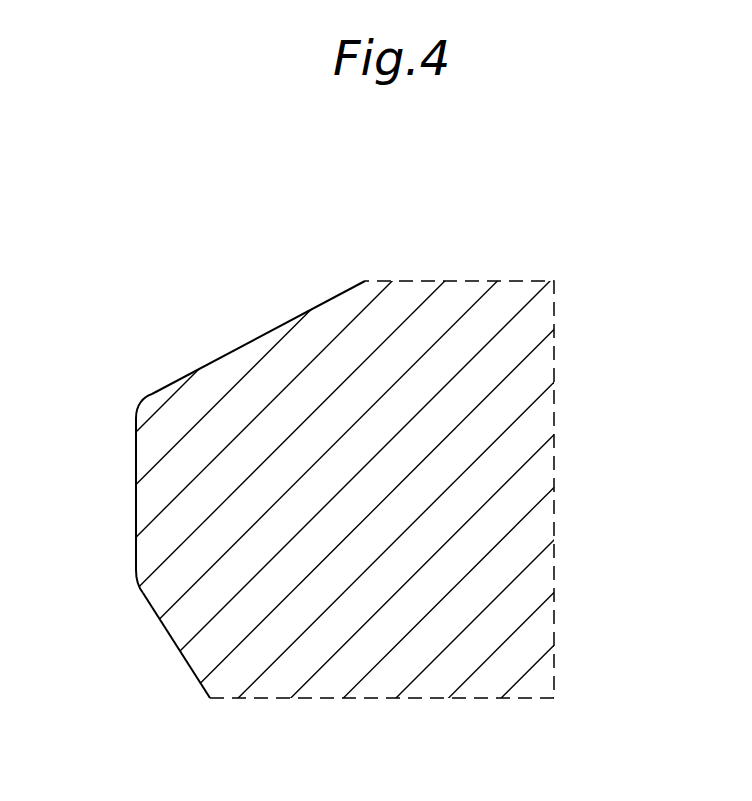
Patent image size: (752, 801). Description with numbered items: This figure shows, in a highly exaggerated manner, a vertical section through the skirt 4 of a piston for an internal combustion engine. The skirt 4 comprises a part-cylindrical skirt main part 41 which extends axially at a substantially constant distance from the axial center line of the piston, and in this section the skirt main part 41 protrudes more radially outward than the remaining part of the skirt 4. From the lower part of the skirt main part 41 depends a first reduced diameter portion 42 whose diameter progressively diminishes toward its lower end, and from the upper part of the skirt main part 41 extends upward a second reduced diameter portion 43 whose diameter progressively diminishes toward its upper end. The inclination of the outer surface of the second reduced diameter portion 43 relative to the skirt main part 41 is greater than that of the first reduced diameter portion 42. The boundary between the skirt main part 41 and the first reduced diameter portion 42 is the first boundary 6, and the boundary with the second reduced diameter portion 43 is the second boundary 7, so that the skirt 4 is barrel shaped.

The skirt 4 is at (275, 292).
The second reduced diameter portion 43 is at (241, 347).
The second boundary 7 is at (143, 401).
The skirt main part 41 is at (136, 497).
The first boundary 6 is at (143, 592).
The first reduced diameter portion 42 is at (185, 657).